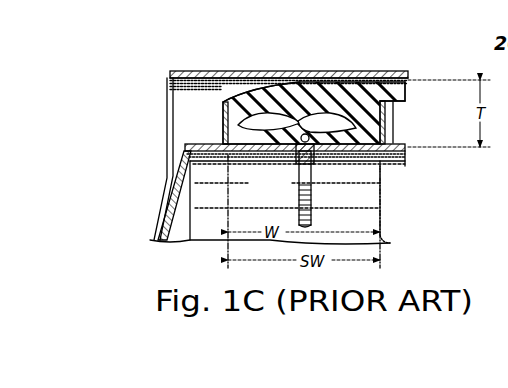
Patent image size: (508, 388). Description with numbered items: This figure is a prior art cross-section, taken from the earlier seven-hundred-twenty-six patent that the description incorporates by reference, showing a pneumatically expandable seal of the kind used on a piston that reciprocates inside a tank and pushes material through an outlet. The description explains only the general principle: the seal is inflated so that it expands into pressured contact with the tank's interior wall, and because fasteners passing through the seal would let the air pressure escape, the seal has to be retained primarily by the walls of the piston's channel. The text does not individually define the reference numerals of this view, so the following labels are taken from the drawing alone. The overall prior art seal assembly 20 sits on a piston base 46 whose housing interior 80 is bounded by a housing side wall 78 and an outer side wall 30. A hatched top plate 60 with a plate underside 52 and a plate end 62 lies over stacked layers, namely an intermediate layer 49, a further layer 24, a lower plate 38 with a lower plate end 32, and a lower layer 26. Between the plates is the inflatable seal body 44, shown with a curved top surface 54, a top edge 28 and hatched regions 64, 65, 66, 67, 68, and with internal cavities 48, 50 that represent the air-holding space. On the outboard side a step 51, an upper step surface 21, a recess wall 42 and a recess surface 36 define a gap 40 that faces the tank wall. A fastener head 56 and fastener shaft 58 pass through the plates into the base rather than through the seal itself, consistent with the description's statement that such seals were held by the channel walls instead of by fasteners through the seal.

The prior art assembly 20 is at (410, 72).
The upper step surface 21 is at (406, 84).
The adhesive layer 24 is at (212, 125).
The lower layer 26 is at (185, 158).
The body top edge 28 is at (372, 97).
The side wall 30 is at (170, 193).
The lower plate end 32 is at (397, 155).
The recess surface 36 is at (388, 132).
The lower plate 38 is at (212, 144).
The gap 40 is at (393, 142).
The recess wall 42 is at (388, 118).
The body block 44 is at (317, 97).
The base housing 46 is at (297, 211).
The cavity 48 is at (269, 125).
The intermediate layer 49 is at (238, 96).
The cavity 50 is at (327, 125).
The step 51 is at (394, 107).
The plate underside 52 is at (222, 92).
The curved top surface 54 is at (273, 88).
The bolt head 56 is at (318, 165).
The bolt shaft 58 is at (315, 192).
The top plate 60 is at (170, 76).
The plate end 62 is at (390, 73).
The hatch region 64 is at (302, 73).
The hatch region 65 is at (258, 88).
The body left region 66 is at (245, 98).
The hatch region 67 is at (352, 97).
The hatch region 68 is at (332, 93).
The housing side wall 78 is at (385, 177).
The housing interior 80 is at (293, 161).